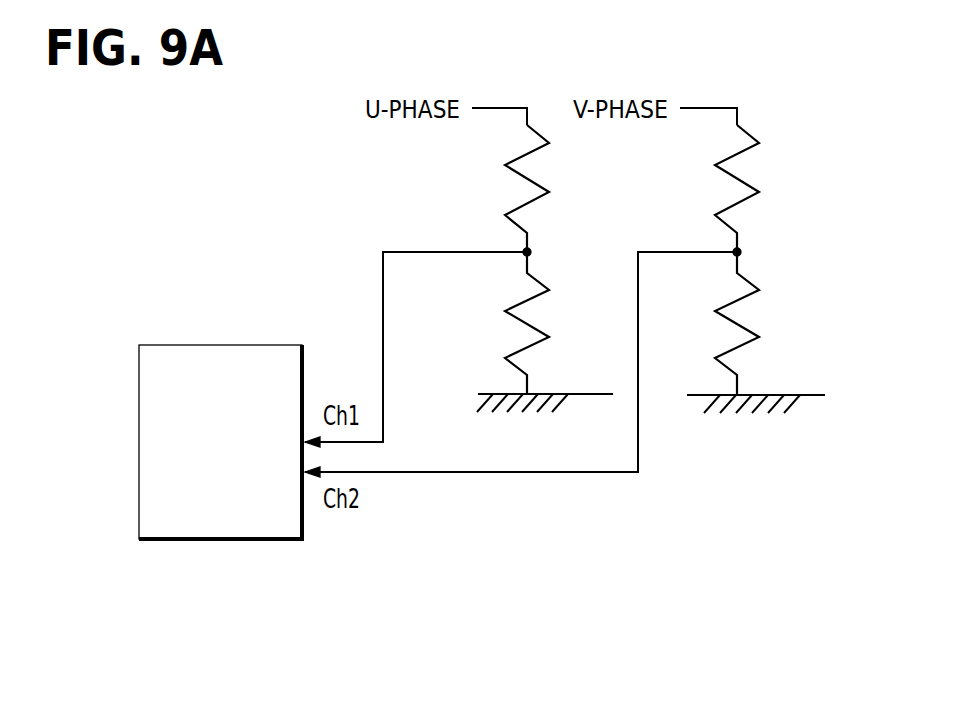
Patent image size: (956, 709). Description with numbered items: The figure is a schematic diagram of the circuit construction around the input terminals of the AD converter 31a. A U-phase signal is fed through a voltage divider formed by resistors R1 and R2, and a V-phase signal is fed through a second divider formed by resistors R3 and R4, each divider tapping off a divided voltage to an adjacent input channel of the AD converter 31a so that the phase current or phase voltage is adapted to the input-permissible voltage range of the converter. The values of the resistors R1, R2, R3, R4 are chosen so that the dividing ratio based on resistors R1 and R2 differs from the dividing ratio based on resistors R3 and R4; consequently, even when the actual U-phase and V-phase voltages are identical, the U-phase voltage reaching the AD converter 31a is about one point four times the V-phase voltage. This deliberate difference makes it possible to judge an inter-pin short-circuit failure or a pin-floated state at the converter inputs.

The AD converter 31a is at (139, 397).
The resistor R1 is at (521, 181).
The resistor R2 is at (521, 327).
The resistor R3 is at (731, 181).
The resistor R4 is at (728, 327).